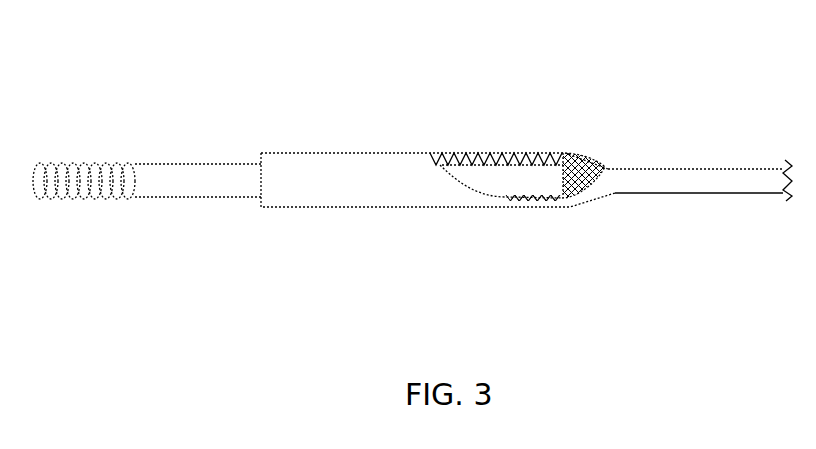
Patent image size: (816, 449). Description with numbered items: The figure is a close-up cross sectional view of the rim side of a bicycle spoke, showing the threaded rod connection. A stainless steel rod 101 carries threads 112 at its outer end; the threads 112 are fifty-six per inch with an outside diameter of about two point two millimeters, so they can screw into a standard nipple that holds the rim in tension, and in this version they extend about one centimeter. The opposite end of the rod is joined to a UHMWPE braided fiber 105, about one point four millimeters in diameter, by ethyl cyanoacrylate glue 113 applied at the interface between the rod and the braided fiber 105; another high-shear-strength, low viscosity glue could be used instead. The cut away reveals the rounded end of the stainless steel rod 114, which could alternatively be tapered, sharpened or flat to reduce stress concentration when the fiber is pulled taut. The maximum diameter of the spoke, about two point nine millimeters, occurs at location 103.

The stainless steel rod 101 is at (217, 164).
The location of maximum diameter 103 is at (400, 207).
The UHMWPE braided fiber 105 is at (670, 168).
The threads 112 is at (90, 163).
The ethyl cyanoacrylate glue 113 is at (463, 153).
The rounded end of the stainless steel rod 114 is at (560, 153).